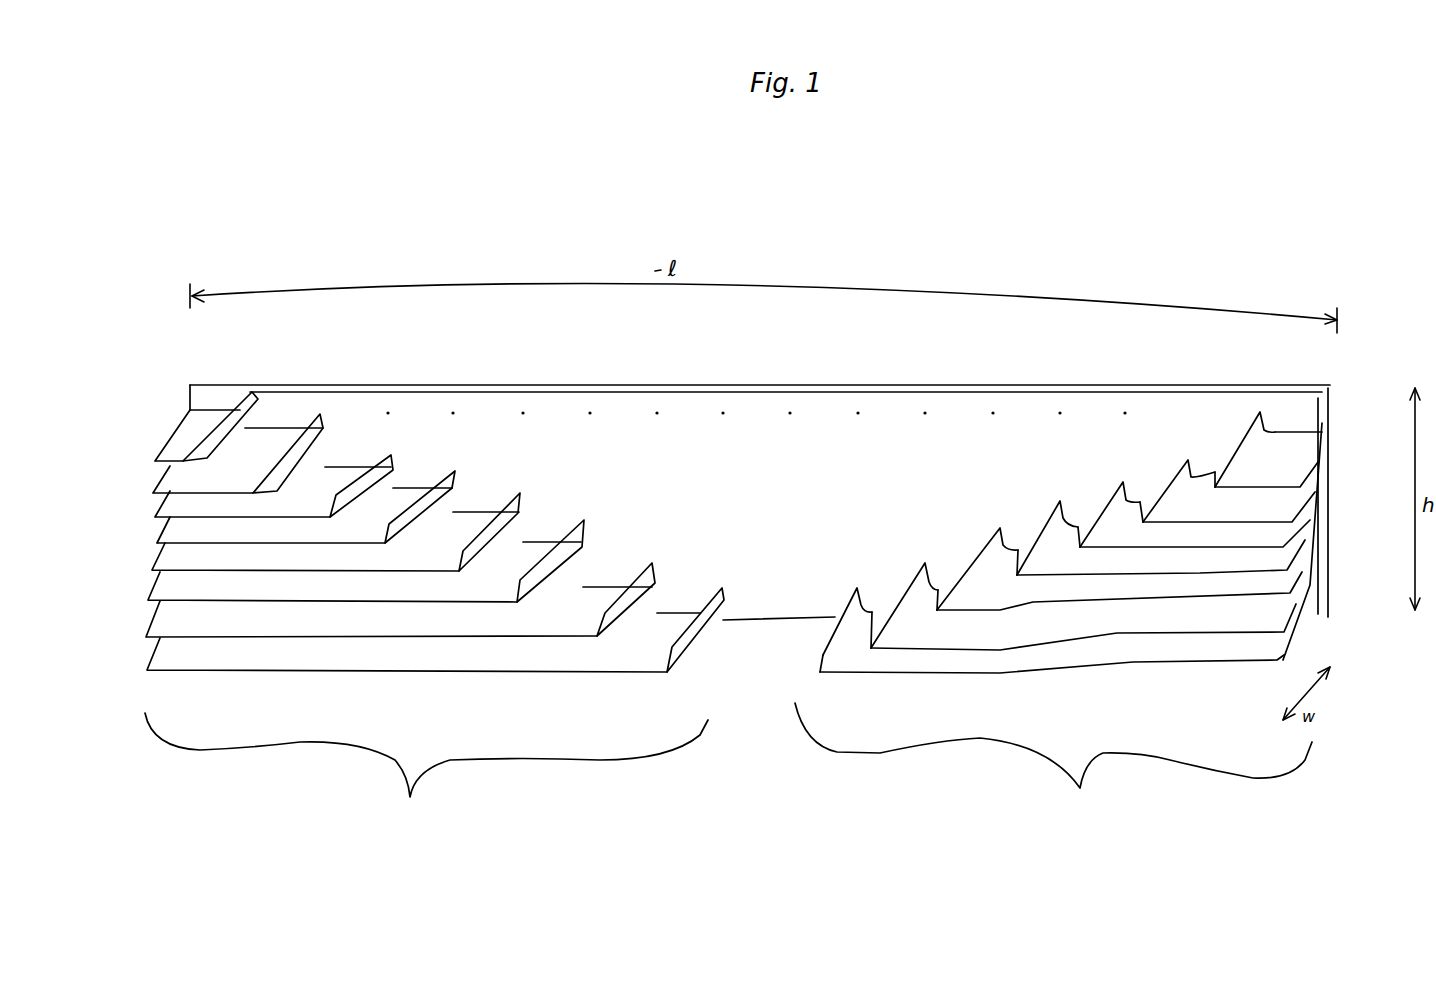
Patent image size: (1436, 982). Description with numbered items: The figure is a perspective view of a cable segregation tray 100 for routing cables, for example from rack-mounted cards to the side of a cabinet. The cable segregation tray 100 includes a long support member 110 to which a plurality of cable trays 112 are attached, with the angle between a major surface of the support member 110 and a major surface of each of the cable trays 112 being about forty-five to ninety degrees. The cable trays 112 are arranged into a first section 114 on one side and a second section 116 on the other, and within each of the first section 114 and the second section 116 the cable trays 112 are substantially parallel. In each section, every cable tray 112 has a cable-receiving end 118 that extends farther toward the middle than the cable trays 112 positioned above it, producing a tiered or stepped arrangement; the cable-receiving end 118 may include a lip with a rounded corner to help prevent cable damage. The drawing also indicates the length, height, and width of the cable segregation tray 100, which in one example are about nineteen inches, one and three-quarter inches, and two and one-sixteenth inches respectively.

The cable segregation tray 100 is at (1057, 227).
The support member 110 is at (1122, 384).
The cable trays 112 is at (163, 441).
The first section 114 is at (426, 778).
The second section 116 is at (1053, 765).
The cable-receiving end 118 is at (262, 402).